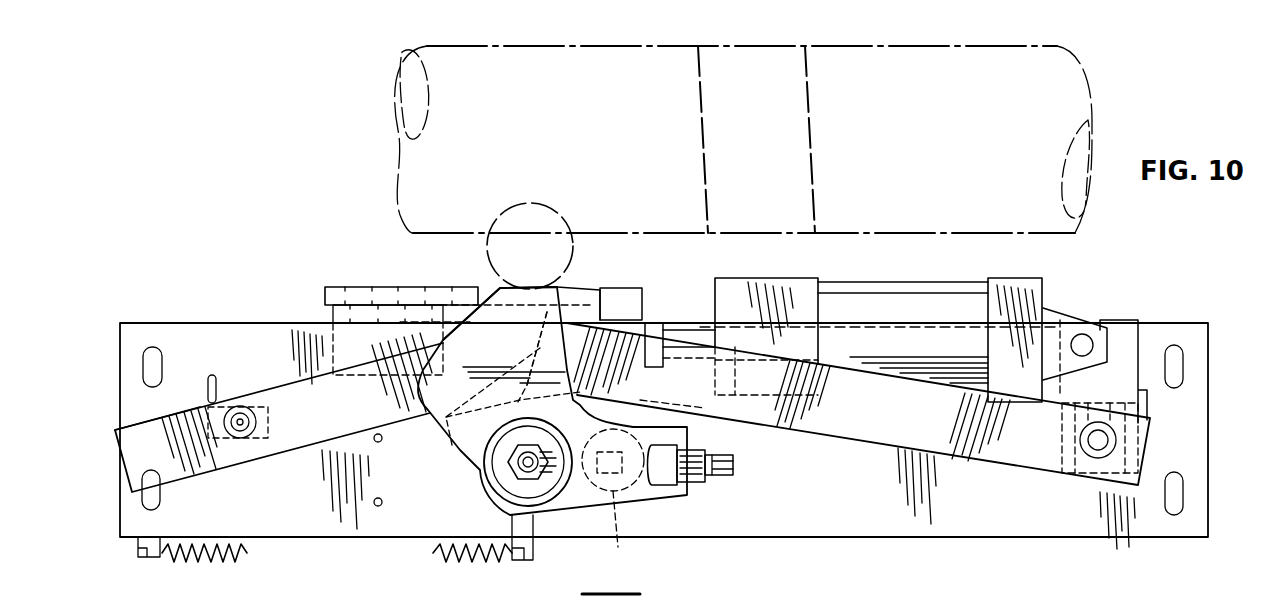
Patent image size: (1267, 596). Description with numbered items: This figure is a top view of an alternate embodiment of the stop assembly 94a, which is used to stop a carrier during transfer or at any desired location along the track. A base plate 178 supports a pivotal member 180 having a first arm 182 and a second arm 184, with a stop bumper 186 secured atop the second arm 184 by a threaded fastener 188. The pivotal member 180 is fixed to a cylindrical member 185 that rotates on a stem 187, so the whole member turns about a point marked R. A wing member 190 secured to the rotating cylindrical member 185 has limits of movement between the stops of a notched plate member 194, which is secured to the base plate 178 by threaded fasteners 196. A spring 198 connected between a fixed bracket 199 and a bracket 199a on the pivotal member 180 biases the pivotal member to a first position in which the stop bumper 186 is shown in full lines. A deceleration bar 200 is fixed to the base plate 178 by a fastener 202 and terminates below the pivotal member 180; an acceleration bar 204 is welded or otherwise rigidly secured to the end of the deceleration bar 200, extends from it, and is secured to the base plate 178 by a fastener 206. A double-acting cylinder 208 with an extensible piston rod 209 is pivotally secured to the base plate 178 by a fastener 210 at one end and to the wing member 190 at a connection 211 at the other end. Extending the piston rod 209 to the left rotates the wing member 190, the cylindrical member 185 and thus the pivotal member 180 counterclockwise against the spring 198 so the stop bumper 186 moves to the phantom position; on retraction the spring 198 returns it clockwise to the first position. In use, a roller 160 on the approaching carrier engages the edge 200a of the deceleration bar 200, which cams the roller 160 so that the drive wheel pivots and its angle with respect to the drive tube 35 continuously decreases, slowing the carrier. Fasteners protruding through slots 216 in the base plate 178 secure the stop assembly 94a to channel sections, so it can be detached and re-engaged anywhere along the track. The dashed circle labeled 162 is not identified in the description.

The drive tube 35 is at (395, 44).
The roller 160 is at (488, 257).
The base plate 178 is at (993, 517).
The slots 216 is at (162, 360).
The deceleration bar 200 is at (331, 421).
The edge of deceleration bar 200a is at (290, 379).
The fastener 202 is at (240, 440).
The fixed bracket 199 is at (137, 545).
The spring 198 is at (208, 560).
The bracket 199a is at (535, 552).
The pivotal member 180 is at (432, 438).
The first arm 182 is at (479, 288).
The connection 211 is at (537, 347).
The cylindrical member 185 is at (478, 470).
The stem 187 is at (515, 493).
The hidden cam 162 is at (619, 543).
The second arm 184 is at (653, 490).
The stop bumper 186 is at (697, 487).
The threaded fastener 188 is at (733, 470).
The threaded fasteners 196 is at (413, 287).
The wing member 190 is at (583, 285).
The notched plate member 194 is at (643, 290).
The piston rod 209 is at (681, 322).
The double-acting cylinder 208 is at (800, 278).
The acceleration bar 204 is at (940, 432).
The fastener 210 is at (1082, 334).
The fastener 206 is at (1097, 458).
The stop assembly 94a is at (240, 291).